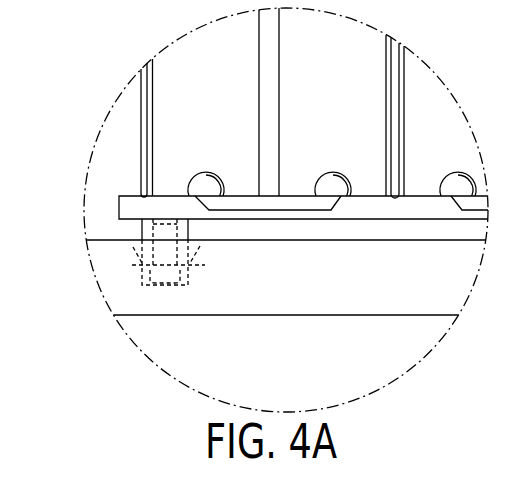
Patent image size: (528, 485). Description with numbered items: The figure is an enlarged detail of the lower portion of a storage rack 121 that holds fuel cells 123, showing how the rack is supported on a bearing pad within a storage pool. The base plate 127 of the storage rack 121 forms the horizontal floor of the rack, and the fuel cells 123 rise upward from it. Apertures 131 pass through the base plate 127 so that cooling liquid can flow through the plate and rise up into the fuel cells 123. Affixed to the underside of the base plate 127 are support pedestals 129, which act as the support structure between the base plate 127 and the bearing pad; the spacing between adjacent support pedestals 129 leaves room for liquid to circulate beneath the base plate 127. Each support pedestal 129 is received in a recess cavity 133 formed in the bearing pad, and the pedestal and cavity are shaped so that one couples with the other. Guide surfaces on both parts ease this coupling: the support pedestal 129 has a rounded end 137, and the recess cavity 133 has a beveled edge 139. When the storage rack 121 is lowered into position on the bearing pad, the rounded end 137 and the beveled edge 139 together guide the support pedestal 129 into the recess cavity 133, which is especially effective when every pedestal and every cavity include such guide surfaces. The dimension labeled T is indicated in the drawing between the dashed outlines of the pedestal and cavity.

The storage rack 121 is at (11, 55).
The fuel cell 123 is at (11, 108).
The base plate 127 is at (117, 200).
The support pedestal 129 is at (141, 230).
The aperture 131 is at (217, 203).
The recess cavity 133 is at (150, 272).
The rounded end 137 is at (180, 272).
The beveled edge 139 is at (132, 248).
The thickness T is at (175, 260).